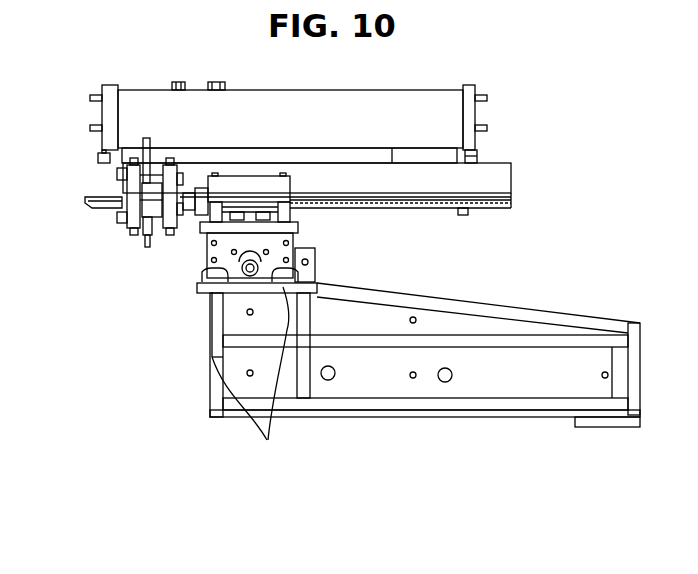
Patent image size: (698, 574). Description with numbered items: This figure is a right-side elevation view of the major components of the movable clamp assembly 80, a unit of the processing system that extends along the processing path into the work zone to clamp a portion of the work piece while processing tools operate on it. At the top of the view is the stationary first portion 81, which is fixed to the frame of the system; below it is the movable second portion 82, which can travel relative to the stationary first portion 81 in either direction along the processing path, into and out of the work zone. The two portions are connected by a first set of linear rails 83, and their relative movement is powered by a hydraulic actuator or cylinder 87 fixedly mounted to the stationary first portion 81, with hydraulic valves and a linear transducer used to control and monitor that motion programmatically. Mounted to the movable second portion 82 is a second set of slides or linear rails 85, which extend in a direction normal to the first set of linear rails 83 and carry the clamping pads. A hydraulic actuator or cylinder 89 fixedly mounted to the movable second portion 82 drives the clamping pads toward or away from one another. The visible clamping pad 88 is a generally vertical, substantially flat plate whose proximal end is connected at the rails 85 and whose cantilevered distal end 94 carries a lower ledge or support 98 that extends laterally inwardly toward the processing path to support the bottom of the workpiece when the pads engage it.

The movable clamp assembly 80 is at (557, 79).
The stationary first portion 81 is at (529, 208).
The movable second portion 82 is at (185, 425).
The first set of linear rails 83 is at (383, 203).
The second set of slides or linear rails 85 is at (250, 379).
The hydraulic actuator or cylinder 87 is at (87, 198).
The clamping pad 88 is at (473, 322).
The hydraulic actuator or cylinder 89 is at (250, 256).
The distal end 94 is at (640, 368).
The lower ledge or support 98 is at (613, 425).